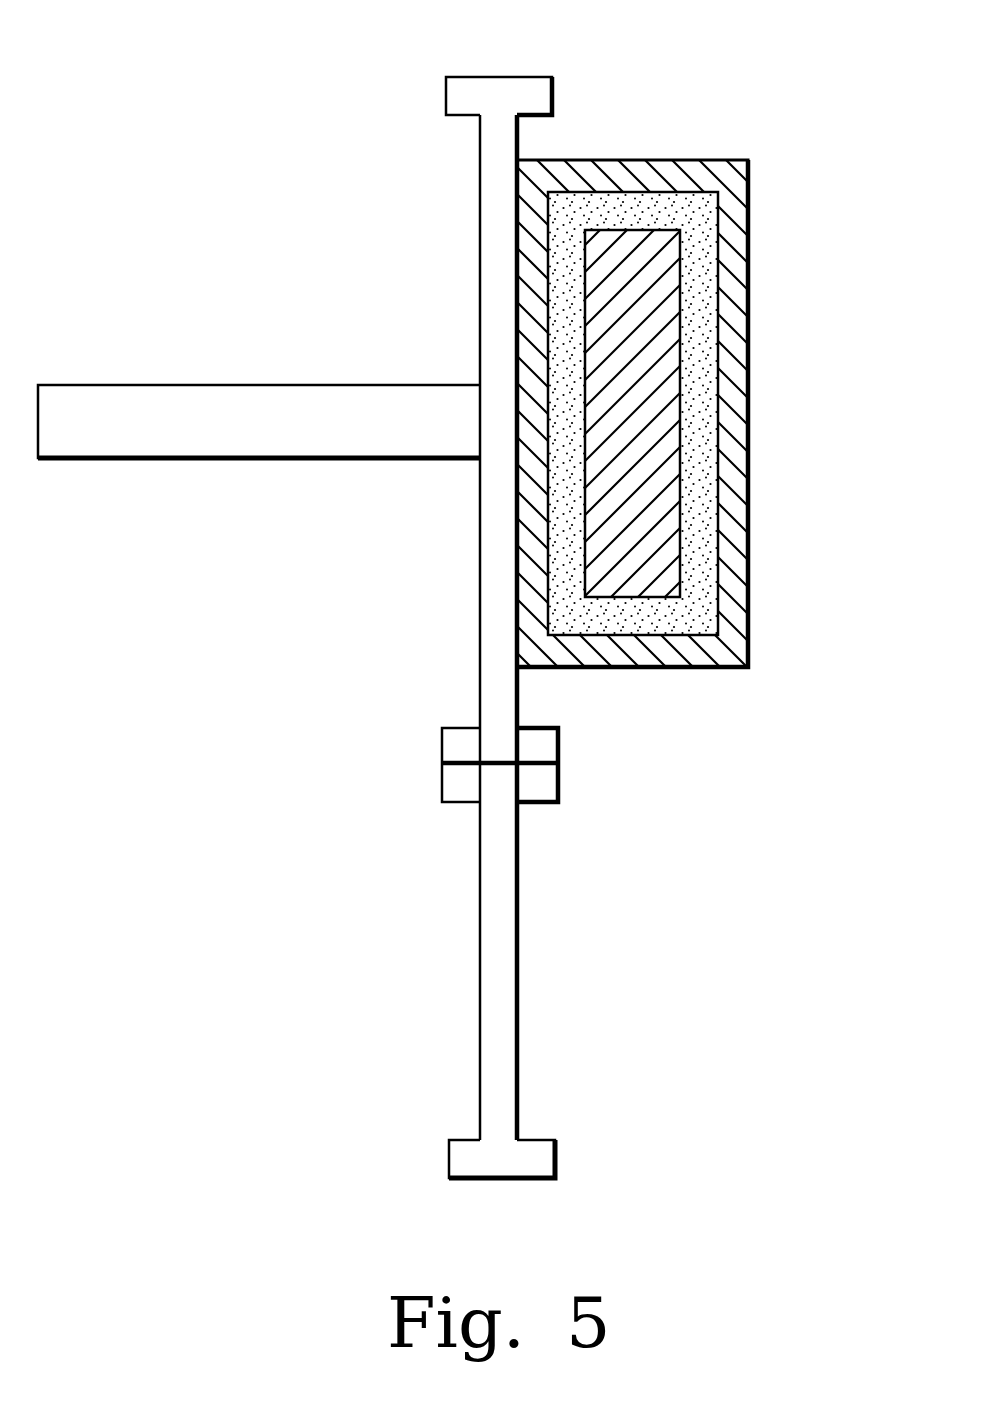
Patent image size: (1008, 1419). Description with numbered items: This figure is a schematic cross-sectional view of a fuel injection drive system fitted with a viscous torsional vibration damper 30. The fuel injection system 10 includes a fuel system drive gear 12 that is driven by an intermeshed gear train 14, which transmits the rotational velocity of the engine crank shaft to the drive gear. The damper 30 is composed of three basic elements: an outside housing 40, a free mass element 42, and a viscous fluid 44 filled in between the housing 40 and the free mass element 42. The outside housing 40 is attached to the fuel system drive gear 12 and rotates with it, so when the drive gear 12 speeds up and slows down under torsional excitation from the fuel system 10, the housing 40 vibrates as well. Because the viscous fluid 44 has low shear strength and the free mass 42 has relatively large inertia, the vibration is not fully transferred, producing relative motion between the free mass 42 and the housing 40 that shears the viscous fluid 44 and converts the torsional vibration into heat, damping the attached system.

The fuel injection system 10 is at (208, 257).
The fuel system drive gear 12 is at (497, 77).
The gear train 14 is at (556, 1158).
The viscous torsional vibration damper 30 is at (504, 394).
The outside housing 40 is at (749, 563).
The free mass element 42 is at (682, 340).
The viscous fluid 44 is at (697, 482).